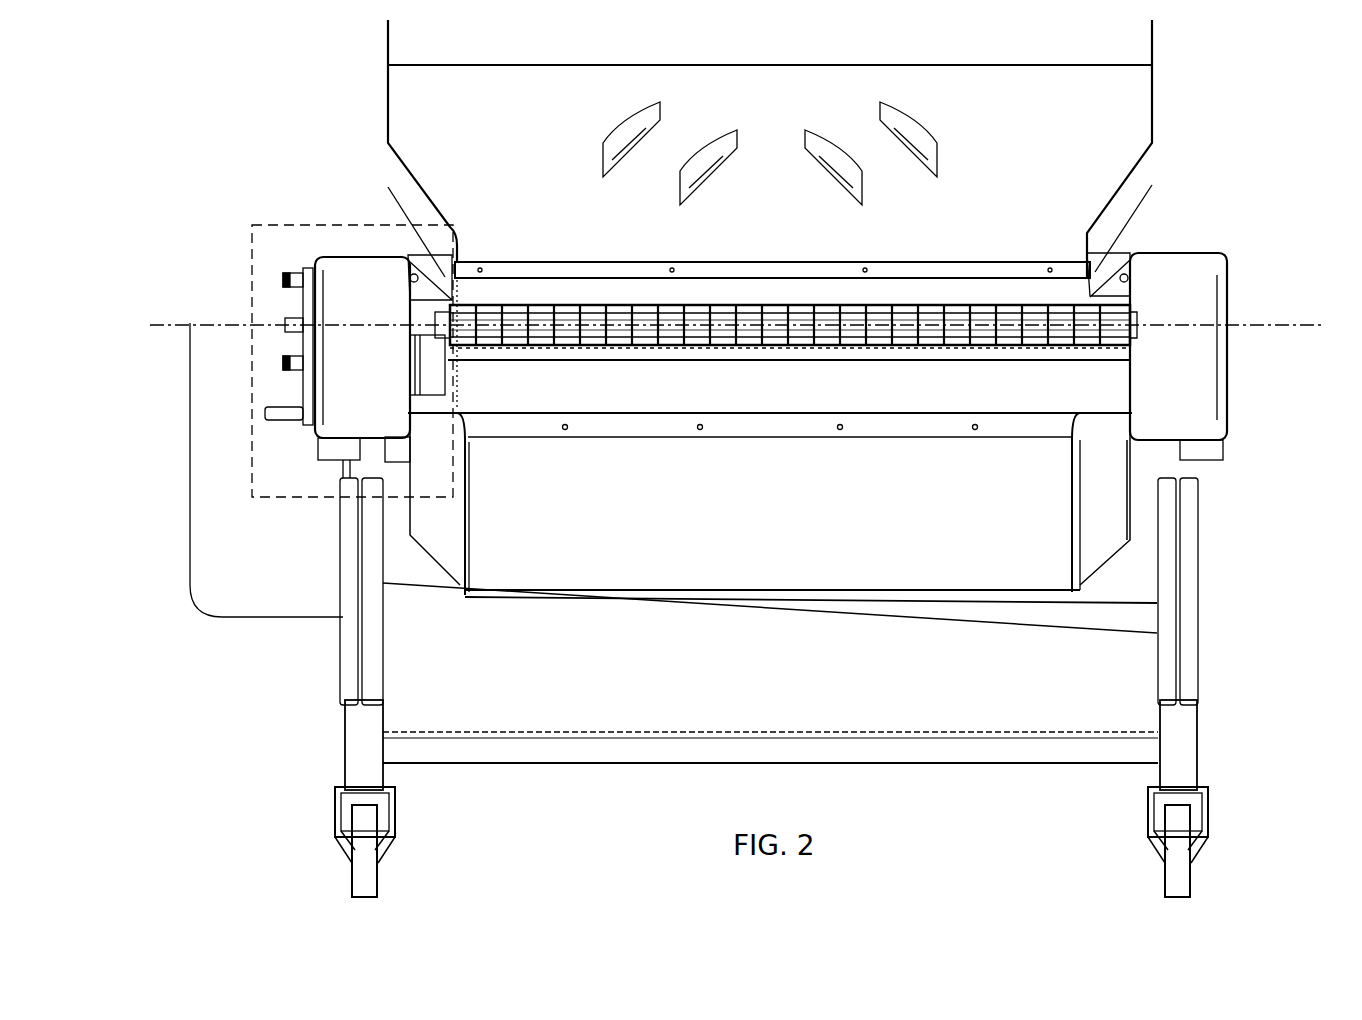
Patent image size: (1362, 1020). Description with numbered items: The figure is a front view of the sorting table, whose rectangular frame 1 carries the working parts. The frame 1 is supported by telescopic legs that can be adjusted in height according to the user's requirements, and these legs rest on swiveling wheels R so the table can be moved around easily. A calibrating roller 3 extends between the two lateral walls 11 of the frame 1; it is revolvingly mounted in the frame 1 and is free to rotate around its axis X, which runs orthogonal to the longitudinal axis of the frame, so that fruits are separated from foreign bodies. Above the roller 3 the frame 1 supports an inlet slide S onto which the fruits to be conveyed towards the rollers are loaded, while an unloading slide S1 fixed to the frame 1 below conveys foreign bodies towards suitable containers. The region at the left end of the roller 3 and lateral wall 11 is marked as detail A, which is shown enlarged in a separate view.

The frame 1 is at (338, 665).
The calibrating roller 3 is at (1120, 347).
The lateral wall 11 is at (1200, 300).
The inlet slide S is at (1058, 100).
The unloading slide S1 is at (1030, 555).
The swiveling wheel R is at (380, 883).
The axis X is at (737, 327).
The detail A is at (352, 344).